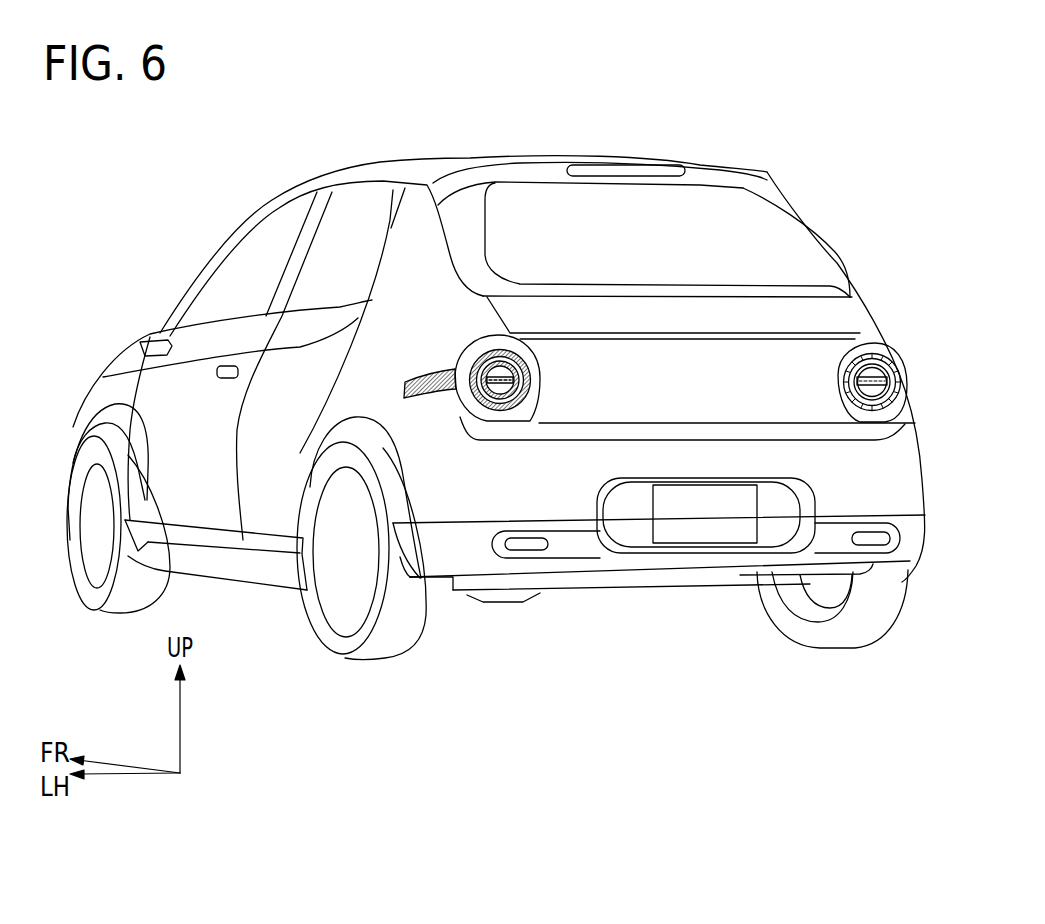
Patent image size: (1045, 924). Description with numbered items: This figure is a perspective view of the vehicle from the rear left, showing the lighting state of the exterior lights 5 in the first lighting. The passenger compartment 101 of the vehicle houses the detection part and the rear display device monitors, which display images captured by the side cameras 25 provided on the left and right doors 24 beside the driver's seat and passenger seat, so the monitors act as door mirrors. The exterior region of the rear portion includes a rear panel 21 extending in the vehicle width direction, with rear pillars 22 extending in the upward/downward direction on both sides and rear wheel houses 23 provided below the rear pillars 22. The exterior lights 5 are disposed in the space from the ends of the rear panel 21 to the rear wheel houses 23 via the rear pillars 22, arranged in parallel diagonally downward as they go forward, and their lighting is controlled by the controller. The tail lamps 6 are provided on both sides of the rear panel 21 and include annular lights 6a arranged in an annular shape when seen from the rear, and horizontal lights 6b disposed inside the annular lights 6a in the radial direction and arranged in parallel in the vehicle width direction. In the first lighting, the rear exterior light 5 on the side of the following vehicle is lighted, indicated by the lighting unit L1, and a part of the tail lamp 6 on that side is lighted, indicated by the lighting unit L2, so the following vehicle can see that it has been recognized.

The passenger compartment 101 is at (249, 275).
The rear pillar 22 is at (388, 342).
The exterior light 5 is at (426, 246).
The tail lamp 6 is at (484, 345).
The annular light 6a is at (513, 367).
The horizontal light 6b is at (501, 390).
The side camera 25 is at (148, 343).
The door 24 is at (177, 441).
The rear wheel house 23 is at (378, 450).
The lighting unit L1 is at (403, 125).
The lighting unit L2 is at (497, 386).
The rear panel 21 is at (783, 452).